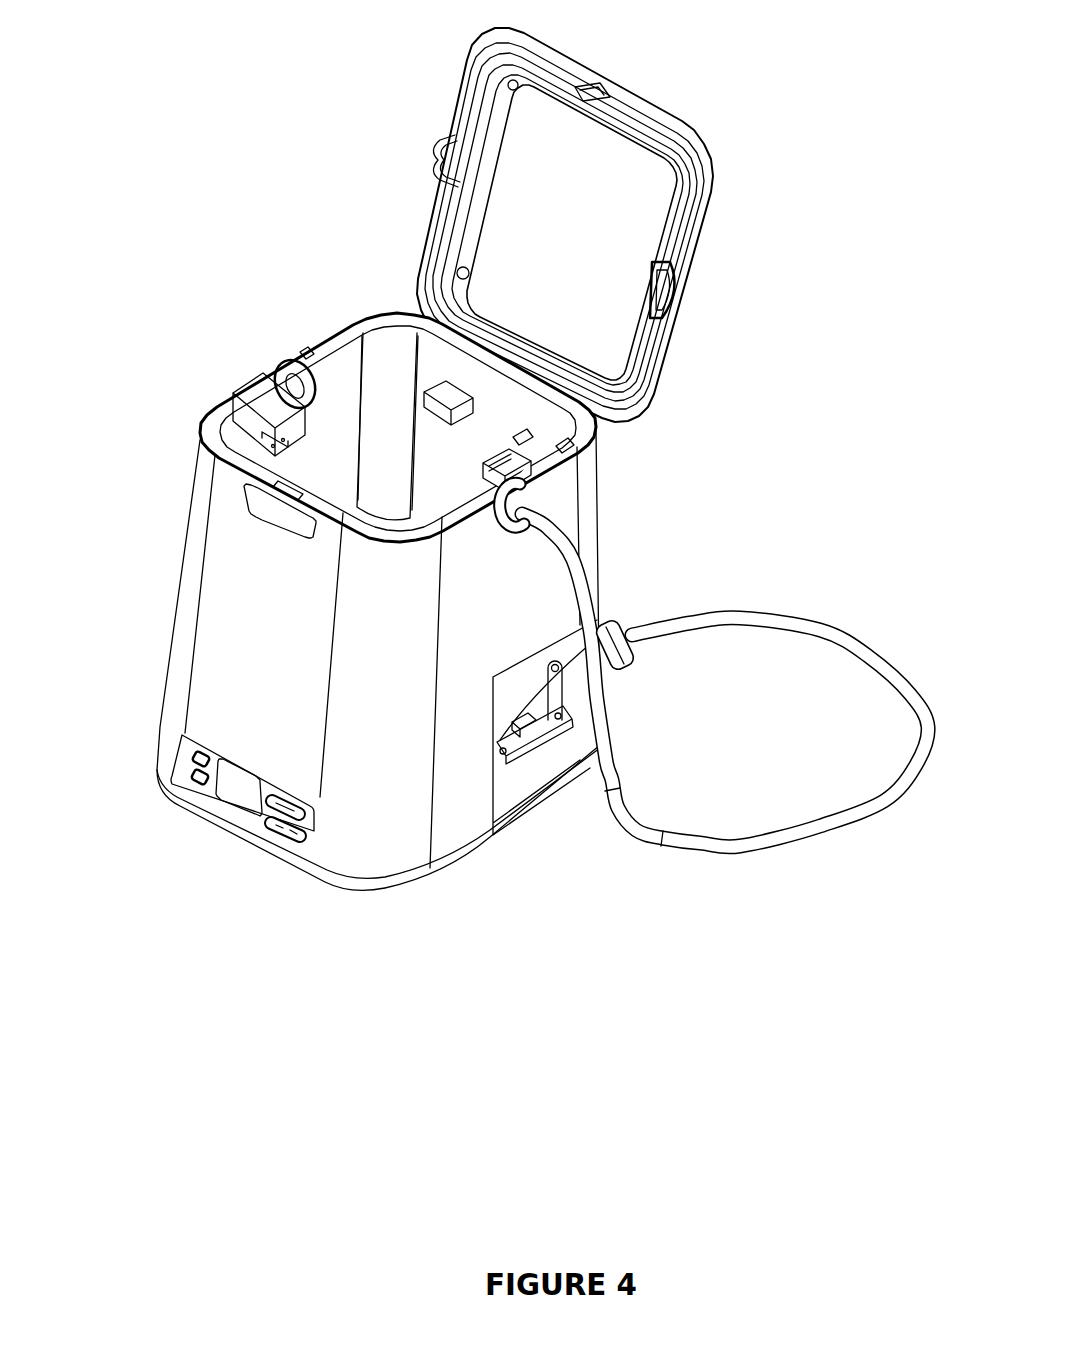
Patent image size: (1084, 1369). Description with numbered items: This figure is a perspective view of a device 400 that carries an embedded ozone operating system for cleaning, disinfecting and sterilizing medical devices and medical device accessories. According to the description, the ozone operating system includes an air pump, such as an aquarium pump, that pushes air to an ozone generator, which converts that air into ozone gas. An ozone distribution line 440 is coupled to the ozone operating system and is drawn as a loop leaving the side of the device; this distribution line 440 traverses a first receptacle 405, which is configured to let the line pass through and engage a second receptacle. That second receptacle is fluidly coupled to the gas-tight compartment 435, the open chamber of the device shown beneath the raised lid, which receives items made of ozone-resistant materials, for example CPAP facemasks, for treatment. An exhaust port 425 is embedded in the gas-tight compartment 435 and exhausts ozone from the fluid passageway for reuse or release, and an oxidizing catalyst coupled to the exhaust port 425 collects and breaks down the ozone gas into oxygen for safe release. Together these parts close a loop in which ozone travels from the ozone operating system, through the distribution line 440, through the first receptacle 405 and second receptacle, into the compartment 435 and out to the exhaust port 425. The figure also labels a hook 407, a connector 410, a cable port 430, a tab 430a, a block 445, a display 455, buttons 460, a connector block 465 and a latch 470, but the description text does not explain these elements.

The device 400 is at (495, 620).
The first receptacle 405 is at (629, 615).
The hook 407 is at (277, 361).
The connector 410 is at (527, 490).
The exhaust port 425 is at (565, 440).
The cable port 430 is at (533, 508).
The tab 430a is at (305, 354).
The gas-tight compartment 435 is at (343, 384).
The ozone distribution line 440 is at (789, 614).
The sensor block 445 is at (438, 390).
The display 455 is at (240, 788).
The buttons 460 is at (272, 838).
The connector block 465 is at (266, 413).
The latch 470 is at (520, 440).